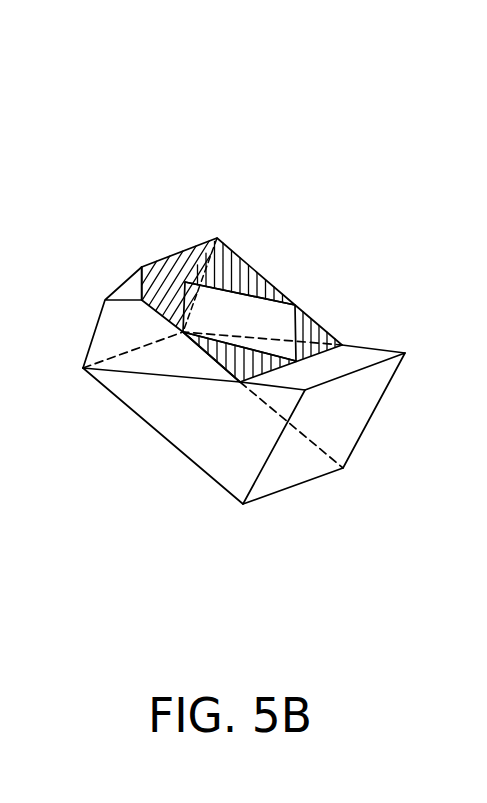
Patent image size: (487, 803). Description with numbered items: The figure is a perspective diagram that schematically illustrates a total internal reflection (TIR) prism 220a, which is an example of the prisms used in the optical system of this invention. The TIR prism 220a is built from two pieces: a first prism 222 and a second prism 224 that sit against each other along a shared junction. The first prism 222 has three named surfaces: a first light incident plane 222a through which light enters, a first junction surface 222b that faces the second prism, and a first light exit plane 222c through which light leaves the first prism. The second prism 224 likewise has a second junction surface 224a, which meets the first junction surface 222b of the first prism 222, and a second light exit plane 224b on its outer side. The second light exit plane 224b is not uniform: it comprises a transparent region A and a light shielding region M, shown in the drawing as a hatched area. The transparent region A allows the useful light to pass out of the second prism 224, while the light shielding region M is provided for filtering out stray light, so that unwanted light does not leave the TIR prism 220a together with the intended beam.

The total internal reflection (TIR) prism 220a is at (229, 349).
The first prism 222 is at (269, 432).
The first light incident plane 222a is at (342, 427).
The first junction surface 222b is at (357, 354).
The first light exit plane 222c is at (240, 433).
The second prism 224 is at (189, 246).
The second junction surface 224a is at (173, 353).
The second light exit plane 224b is at (257, 321).
The light shielding region M is at (157, 281).
The transparent region A is at (280, 353).